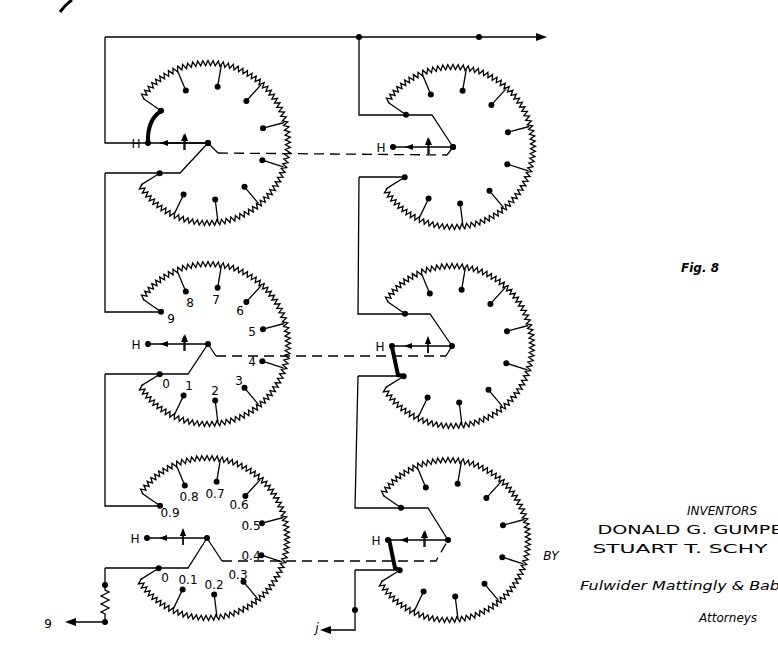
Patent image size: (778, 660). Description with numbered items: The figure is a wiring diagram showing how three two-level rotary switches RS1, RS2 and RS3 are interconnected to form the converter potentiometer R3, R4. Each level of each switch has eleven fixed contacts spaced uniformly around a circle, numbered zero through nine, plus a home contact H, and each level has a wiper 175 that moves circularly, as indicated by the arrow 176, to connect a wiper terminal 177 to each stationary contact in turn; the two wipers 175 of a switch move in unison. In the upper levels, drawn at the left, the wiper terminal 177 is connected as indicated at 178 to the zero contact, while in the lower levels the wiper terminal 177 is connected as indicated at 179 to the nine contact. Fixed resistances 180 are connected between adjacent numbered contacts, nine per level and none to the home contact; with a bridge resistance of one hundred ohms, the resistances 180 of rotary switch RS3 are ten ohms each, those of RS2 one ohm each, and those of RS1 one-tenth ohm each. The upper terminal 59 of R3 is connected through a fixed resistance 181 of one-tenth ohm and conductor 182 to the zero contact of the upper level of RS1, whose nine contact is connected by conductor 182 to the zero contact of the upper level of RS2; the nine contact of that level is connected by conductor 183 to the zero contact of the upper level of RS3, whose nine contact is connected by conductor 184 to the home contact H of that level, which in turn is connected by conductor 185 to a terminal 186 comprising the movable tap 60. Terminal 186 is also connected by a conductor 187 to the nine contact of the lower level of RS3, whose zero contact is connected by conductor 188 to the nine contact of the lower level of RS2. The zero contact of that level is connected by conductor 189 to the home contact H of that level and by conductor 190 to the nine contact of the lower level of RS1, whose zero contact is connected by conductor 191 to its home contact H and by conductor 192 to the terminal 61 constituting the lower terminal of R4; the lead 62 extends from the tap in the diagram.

The upper terminal 59 is at (105, 606).
The movable tap 60 is at (494, 28).
The lower terminal 61 is at (343, 611).
The output lead 62 is at (513, 49).
The wiper 175 is at (184, 157).
The arrow 176 is at (201, 130).
The wiper terminal 177 is at (343, 153).
The connection 178 is at (191, 158).
The connection 179 is at (442, 131).
The fixed resistances 180 is at (210, 154).
The fixed resistance 181 is at (89, 595).
The conductor 182 is at (113, 477).
The conductor 183 is at (112, 242).
The conductor 184 is at (133, 127).
The conductor 185 is at (126, 90).
The terminal 186 is at (417, 44).
The conductor 187 is at (382, 76).
The conductor 188 is at (381, 245).
The conductor 189 is at (419, 364).
The conductor 190 is at (379, 442).
The conductor 191 is at (414, 554).
The conductor 192 is at (360, 602).
The converter potentiometer resistance R3 is at (210, 141).
The converter potentiometer resistance R4 is at (455, 137).
The rotary switch RS1 is at (470, 540).
The rotary switch RS2 is at (475, 346).
The rotary switch RS3 is at (477, 137).